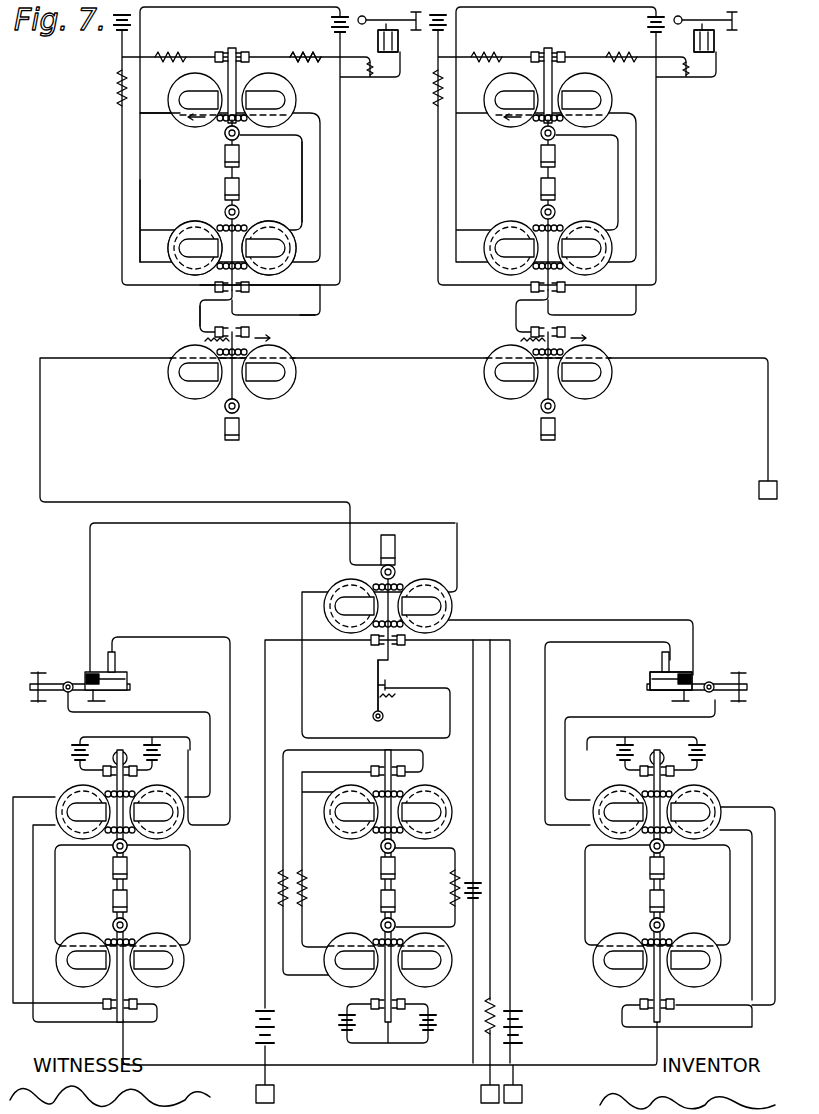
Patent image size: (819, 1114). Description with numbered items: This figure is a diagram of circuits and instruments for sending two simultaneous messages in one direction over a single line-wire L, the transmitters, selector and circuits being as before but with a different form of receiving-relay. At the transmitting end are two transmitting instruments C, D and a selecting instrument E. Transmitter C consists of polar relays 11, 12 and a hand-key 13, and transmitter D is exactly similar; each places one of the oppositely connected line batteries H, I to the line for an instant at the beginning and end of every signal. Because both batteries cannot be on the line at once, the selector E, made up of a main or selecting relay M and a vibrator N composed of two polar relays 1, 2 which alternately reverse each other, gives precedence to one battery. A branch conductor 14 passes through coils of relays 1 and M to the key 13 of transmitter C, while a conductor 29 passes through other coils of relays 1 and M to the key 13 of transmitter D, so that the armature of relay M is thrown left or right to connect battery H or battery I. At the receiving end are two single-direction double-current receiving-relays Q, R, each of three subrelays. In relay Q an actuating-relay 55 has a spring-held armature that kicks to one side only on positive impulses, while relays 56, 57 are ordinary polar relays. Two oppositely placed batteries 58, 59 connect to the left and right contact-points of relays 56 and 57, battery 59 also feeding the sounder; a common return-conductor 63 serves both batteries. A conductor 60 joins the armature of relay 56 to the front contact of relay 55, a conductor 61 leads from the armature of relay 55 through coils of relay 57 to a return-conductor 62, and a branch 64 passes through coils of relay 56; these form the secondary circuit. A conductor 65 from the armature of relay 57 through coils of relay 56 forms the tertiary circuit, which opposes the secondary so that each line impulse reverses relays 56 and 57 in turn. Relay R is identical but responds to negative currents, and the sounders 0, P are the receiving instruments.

The battery 58 is at (109, 38).
The return-conductor 63 is at (269, 26).
The battery 59 is at (306, 47).
The sounder 0 is at (394, 53).
The sounder P is at (720, 51).
The conductor 61 is at (165, 123).
The polar relay 57 is at (214, 139).
The return-conductor 62 is at (158, 183).
The conductor 65 is at (300, 188).
The receiving-relay Q is at (253, 223).
The receiving-relay R is at (583, 223).
The polar relay 56 is at (232, 239).
The branch conductor 64 is at (260, 278).
The conductor 60 is at (200, 320).
The actuating-relay 55 is at (246, 411).
The line-wire L is at (408, 440).
The branch conductor 14 is at (273, 630).
The selecting relay M is at (382, 625).
The conductor 29 is at (546, 637).
The hand-key 13 is at (692, 677).
The selecting instrument E is at (365, 690).
The transmitting instrument C is at (110, 837).
The transmitting instrument D is at (667, 837).
The vibrator N is at (388, 886).
The polar relay 11 is at (388, 851).
The polar relay 12 is at (388, 927).
The polar relay 1 is at (376, 851).
The polar relay 2 is at (376, 928).
The line battery H is at (248, 1057).
The line battery I is at (509, 1057).